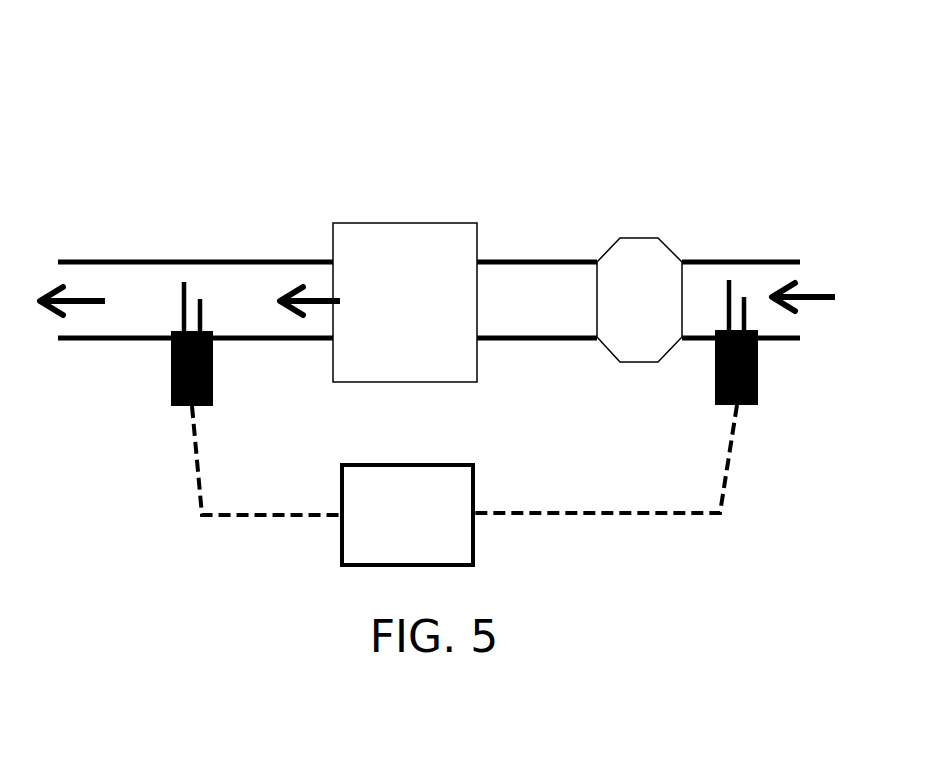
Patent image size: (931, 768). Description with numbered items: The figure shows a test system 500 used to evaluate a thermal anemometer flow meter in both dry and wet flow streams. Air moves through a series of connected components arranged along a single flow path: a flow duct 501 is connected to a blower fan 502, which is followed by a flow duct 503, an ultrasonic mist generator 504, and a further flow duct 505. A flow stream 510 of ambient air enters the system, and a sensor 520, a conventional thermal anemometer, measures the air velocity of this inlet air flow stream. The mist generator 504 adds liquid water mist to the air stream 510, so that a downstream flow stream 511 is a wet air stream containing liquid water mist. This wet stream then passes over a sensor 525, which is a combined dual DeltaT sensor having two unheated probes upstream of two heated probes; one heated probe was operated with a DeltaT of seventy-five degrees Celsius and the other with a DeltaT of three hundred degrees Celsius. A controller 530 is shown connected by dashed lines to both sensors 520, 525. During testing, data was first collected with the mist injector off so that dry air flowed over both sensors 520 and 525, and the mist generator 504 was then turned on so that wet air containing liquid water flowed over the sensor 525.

The system 500 is at (210, 118).
The flow duct 501 is at (708, 262).
The blower fan 502 is at (635, 248).
The flow duct 503 is at (520, 264).
The ultrasonic mist generator 504 is at (418, 224).
The flow duct 505 is at (117, 262).
The flow stream 510 is at (803, 287).
The flow stream 511 is at (313, 300).
The sensor 520 is at (750, 405).
The sensor 525 is at (172, 383).
The controller 530 is at (473, 483).